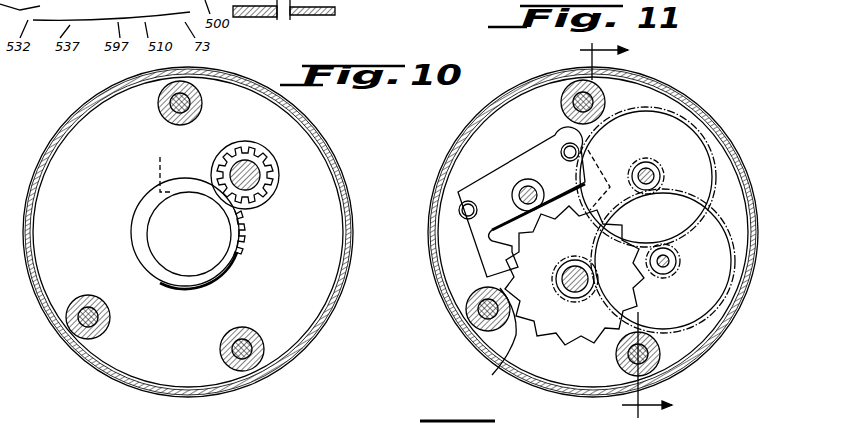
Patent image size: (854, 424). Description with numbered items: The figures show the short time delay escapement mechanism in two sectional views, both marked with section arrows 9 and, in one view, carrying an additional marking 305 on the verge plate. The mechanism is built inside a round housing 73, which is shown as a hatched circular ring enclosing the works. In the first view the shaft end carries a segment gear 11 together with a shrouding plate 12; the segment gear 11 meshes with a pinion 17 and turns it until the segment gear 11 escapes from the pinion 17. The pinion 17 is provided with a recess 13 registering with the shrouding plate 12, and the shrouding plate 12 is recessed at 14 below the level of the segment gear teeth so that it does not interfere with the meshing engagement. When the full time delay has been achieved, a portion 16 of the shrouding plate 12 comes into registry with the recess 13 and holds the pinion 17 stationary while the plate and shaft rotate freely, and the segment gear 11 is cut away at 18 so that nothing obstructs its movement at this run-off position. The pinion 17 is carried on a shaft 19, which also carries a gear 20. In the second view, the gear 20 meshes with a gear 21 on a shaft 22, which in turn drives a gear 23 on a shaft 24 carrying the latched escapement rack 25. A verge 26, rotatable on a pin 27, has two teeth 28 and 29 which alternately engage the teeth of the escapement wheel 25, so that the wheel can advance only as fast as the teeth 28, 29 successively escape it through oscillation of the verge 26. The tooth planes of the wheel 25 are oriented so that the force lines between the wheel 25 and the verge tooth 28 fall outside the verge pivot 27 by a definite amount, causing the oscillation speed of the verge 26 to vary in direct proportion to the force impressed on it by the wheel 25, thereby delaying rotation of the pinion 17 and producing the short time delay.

In FIG. 11, the section line 9- 9 is at (635, 229).
In FIG. 10, the segment gear 11 is at (241, 253).
In FIG. 10, the shrouding plate 12 is at (180, 180).
In FIG. 10, the recess 13 is at (232, 192).
In FIG. 10, the recess 14 is at (245, 227).
In FIG. 10, the portion of shrouding plate 16 is at (197, 179).
In FIG. 10, the pinion 17 is at (253, 158).
In FIG. 10, the cut away 18 is at (156, 168).
In FIG. 10, the shaft 19 is at (250, 173).
In FIG. 11, the shaft 19 is at (654, 176).
In FIG. 11, the gear 20 is at (700, 148).
In FIG. 11, the gear 21 is at (677, 262).
In FIG. 11, the shaft 22 is at (667, 277).
In FIG. 11, the gear 23 is at (582, 302).
In FIG. 11, the shaft 24 is at (575, 291).
In FIG. 11, the latched escapement rack 25 is at (497, 338).
In FIG. 11, the verge 26 is at (498, 163).
In FIG. 11, the pin 27 is at (517, 190).
In FIG. 11, the tooth 28 is at (473, 262).
In FIG. 11, the tooth 29 is at (600, 200).
In FIG. 10, the housing 73 is at (340, 147).
In FIG. 11, the housing 73 is at (705, 100).
In FIG. 11, the pawl plate 305 is at (553, 127).